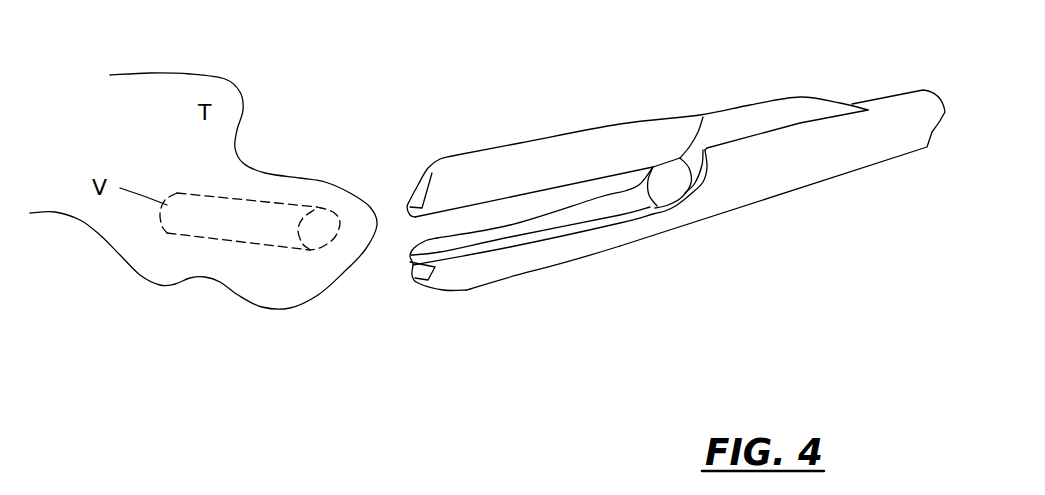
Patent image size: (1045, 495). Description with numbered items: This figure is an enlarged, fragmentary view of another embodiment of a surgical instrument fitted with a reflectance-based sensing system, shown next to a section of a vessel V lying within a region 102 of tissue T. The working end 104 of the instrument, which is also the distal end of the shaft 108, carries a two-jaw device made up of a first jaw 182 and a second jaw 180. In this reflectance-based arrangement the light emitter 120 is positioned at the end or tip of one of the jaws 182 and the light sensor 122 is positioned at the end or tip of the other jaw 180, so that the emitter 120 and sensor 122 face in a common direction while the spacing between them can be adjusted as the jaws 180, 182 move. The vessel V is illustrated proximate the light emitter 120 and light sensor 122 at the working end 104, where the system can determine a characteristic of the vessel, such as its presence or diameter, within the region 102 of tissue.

The region of tissue 102 is at (170, 277).
The working end 104 is at (648, 185).
The shaft 108 is at (913, 107).
The light emitter 120 is at (415, 193).
The light sensor 122 is at (413, 275).
The lower jaw 180 is at (528, 249).
The upper jaw 182 is at (609, 147).